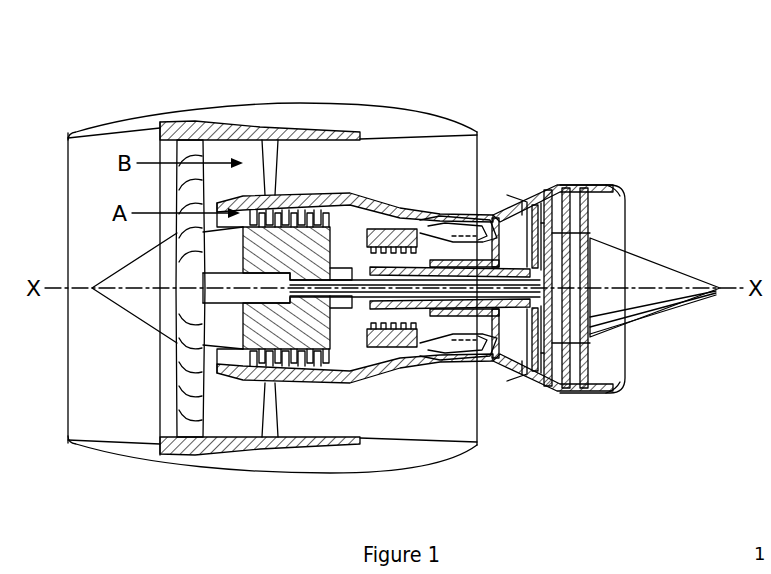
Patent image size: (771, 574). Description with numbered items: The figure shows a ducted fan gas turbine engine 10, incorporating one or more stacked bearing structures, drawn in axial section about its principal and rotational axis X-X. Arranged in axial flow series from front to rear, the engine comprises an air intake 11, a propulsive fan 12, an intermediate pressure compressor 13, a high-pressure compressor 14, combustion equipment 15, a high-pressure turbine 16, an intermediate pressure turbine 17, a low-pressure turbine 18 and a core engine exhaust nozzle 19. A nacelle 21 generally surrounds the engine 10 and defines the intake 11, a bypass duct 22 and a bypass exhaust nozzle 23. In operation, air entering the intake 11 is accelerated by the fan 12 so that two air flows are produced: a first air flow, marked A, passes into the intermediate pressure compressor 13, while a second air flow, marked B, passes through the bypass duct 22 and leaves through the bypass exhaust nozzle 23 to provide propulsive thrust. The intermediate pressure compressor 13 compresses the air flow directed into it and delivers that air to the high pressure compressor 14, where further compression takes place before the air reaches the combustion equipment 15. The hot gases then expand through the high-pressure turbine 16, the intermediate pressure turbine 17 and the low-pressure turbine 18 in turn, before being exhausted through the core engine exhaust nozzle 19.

The ducted fan gas turbine engine 10 is at (124, 78).
The air intake 11 is at (110, 136).
The propulsive fan 12 is at (176, 392).
The intermediate pressure compressor 13 is at (297, 368).
The high-pressure compressor 14 is at (394, 226).
The combustion equipment 15 is at (433, 352).
The high-pressure turbine 16 is at (493, 363).
The intermediate pressure turbine 17 is at (517, 208).
The low-pressure turbine 18 is at (543, 387).
The core engine exhaust nozzle 19 is at (620, 186).
The nacelle 21 is at (272, 102).
The bypass duct 22 is at (447, 168).
The bypass exhaust nozzle 23 is at (478, 131).